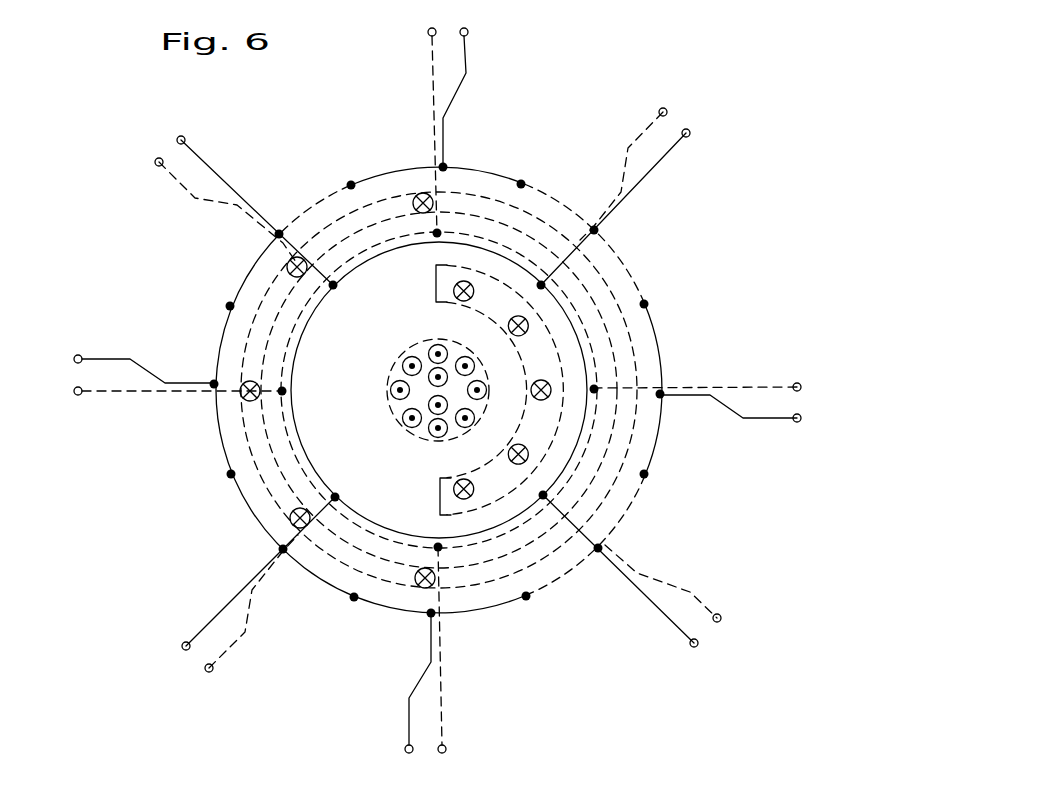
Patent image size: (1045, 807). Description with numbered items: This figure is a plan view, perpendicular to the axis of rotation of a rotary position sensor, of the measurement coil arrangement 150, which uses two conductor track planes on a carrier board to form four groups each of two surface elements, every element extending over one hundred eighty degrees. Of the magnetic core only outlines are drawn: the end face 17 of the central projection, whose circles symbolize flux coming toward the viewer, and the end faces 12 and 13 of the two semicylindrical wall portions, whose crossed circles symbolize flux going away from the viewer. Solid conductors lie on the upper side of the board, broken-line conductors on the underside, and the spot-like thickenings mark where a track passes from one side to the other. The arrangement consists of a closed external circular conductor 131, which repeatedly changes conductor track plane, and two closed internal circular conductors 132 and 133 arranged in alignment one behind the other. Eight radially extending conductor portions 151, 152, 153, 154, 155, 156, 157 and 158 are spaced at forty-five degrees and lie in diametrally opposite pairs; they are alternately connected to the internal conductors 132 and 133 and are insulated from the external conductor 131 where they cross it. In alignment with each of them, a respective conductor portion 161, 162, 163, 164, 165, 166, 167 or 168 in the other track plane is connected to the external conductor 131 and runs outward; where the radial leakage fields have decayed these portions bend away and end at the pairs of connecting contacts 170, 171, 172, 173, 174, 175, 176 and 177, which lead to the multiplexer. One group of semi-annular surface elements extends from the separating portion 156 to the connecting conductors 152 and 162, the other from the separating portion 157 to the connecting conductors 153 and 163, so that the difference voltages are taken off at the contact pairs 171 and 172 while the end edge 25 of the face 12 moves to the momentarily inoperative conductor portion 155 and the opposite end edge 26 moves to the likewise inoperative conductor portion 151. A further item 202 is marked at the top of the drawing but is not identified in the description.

The end face 12 is at (250, 456).
The end face 13 is at (437, 285).
The end face 17 is at (395, 367).
The end edge 25 is at (445, 577).
The end edge 26 is at (435, 200).
The external circular conductor 131 is at (660, 345).
The internal circular conductor 132 is at (293, 415).
The internal circular conductor 133 is at (373, 527).
The measurement coil arrangement 150 is at (323, 116).
The conductor portion 151 is at (233, 187).
The conductor portion 152 is at (143, 395).
The conductor portion 153 is at (225, 605).
The conductor portion 154 is at (445, 700).
The conductor portion 155 is at (640, 597).
The separating portion 156 is at (745, 388).
The separating portion 157 is at (650, 171).
The conductor portion 158 is at (432, 110).
The conductor portion 161 is at (195, 199).
The conductor portion 162 is at (130, 357).
The conductor portion 163 is at (252, 643).
The conductor portion 164 is at (408, 705).
The conductor portion 165 is at (700, 595).
The conductor portion 166 is at (770, 420).
The conductor portion 167 is at (628, 148).
The conductor portion 168 is at (467, 72).
The pair of connecting contacts 170 is at (170, 152).
The pair of connecting contacts 171 is at (72, 374).
The pair of connecting contacts 172 is at (190, 656).
The pair of connecting contacts 173 is at (425, 750).
The pair of connecting contacts 174 is at (712, 630).
The pair of connecting contacts 175 is at (800, 403).
The pair of connecting contacts 176 is at (682, 126).
The pair of connecting contacts 177 is at (447, 28).
The terminal 202 is at (434, 22).